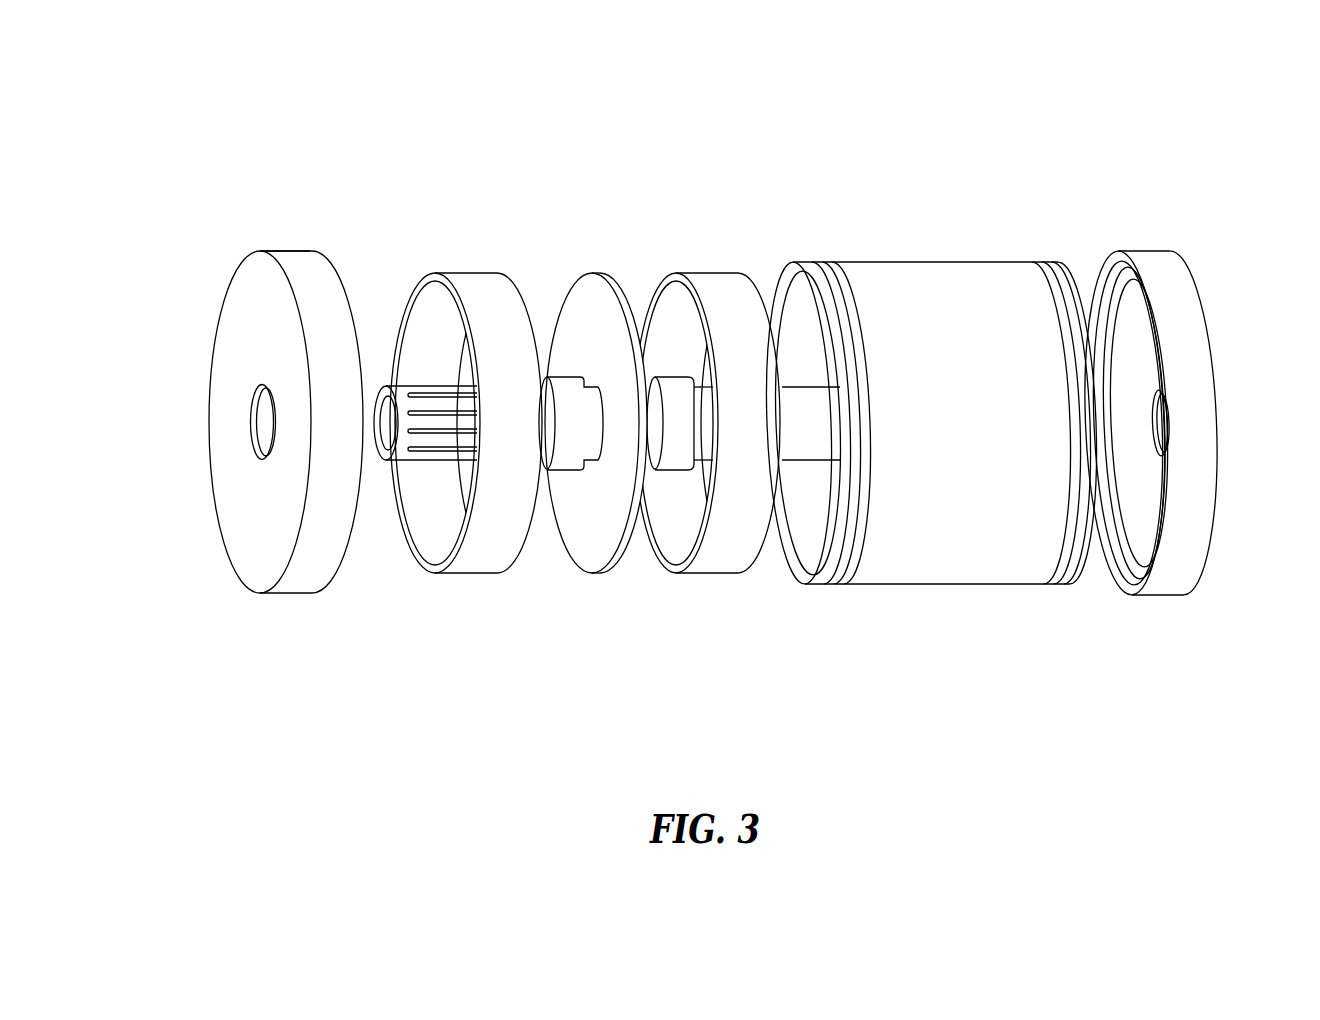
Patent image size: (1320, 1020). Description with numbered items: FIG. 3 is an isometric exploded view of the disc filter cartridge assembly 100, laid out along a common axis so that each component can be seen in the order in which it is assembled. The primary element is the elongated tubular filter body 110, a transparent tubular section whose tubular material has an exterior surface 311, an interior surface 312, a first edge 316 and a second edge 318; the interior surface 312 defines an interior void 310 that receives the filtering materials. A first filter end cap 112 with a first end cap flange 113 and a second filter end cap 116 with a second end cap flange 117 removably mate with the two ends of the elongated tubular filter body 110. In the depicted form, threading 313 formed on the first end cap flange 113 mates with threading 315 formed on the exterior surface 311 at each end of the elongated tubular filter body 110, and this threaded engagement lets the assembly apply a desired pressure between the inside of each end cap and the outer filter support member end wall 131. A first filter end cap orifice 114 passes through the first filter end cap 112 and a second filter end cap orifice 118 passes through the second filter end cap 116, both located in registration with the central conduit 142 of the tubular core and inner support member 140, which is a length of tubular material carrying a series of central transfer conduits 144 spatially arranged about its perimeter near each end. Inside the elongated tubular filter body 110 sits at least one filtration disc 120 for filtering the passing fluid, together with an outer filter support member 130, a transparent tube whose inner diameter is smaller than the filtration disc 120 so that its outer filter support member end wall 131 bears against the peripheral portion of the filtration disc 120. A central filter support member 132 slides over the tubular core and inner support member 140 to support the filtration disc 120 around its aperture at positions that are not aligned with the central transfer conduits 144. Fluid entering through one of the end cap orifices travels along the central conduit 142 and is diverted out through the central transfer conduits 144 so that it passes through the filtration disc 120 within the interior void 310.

The disc filter cartridge assembly 100 is at (347, 146).
The elongated tubular filter body 110 is at (942, 543).
The first filter end cap 112 is at (1208, 534).
The first end cap flange 113 is at (1165, 578).
The first filter end cap orifice 114 is at (1148, 423).
The second filter end cap 116 is at (263, 571).
The second end cap flange 117 is at (307, 272).
The second filter end cap orifice 118 is at (252, 428).
The filtration disc 120 is at (614, 278).
The outer filter support member 130 is at (500, 543).
The outer filter support member end wall 131 is at (428, 568).
The central filter support member 132 is at (683, 418).
The tubular core and inner support member 140 is at (823, 418).
The central conduit 142 is at (377, 423).
The central transfer conduits 144 is at (443, 414).
The interior void 310 is at (793, 299).
The exterior surface 311 is at (1048, 537).
The interior surface 312 is at (806, 518).
The threading 313 is at (1088, 283).
The threading 315 is at (1058, 324).
The first edge 316 is at (1084, 289).
The second edge 318 is at (783, 262).